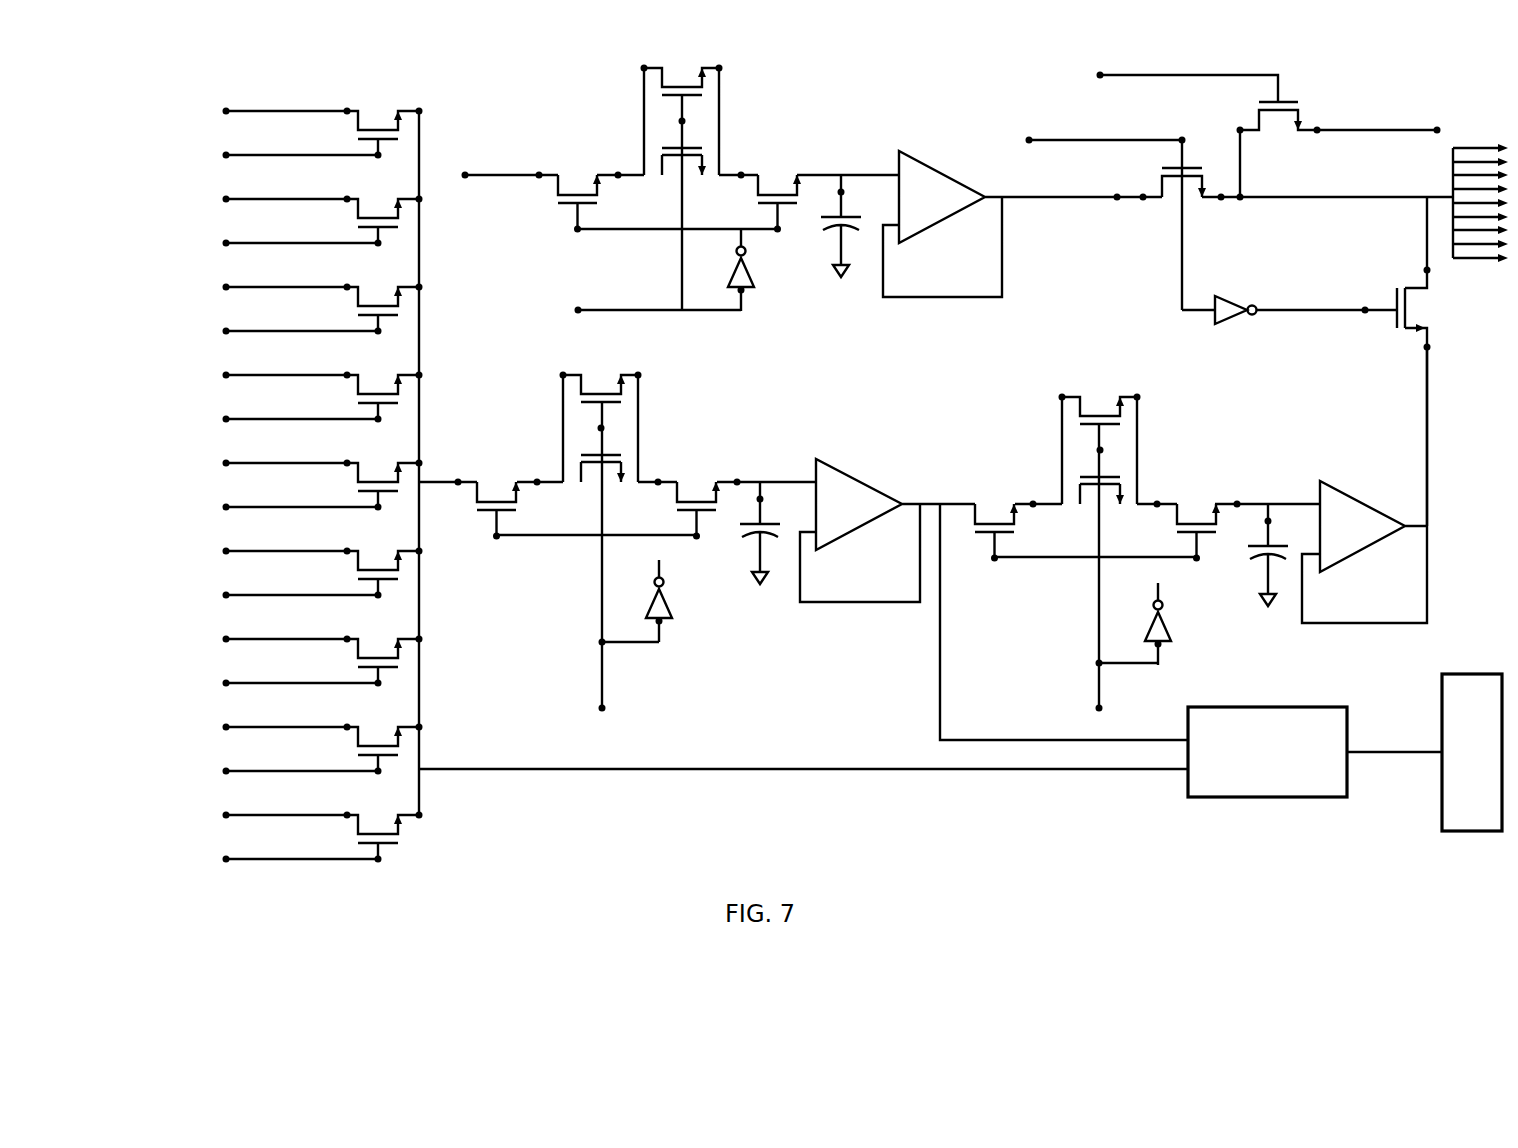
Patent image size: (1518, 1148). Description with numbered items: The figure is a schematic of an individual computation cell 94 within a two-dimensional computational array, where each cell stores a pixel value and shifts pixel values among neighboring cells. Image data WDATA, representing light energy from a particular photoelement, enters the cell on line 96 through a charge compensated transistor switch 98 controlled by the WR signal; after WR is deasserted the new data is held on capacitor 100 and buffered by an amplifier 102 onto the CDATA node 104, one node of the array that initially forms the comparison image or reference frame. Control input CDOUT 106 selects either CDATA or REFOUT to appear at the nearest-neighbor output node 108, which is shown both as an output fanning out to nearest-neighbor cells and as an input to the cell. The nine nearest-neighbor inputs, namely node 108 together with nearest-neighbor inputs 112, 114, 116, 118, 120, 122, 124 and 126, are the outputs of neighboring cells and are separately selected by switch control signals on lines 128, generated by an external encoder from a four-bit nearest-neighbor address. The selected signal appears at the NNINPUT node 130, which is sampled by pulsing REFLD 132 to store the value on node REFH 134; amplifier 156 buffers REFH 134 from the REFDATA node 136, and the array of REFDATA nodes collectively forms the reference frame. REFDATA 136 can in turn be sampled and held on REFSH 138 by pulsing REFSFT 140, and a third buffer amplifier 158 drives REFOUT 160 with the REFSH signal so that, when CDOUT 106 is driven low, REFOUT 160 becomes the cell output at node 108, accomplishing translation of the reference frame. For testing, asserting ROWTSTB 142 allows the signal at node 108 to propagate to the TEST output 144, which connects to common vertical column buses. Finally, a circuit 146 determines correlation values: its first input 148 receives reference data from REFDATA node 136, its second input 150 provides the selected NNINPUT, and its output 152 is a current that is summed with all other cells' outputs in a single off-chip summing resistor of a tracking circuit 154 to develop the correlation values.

The computation cell 94 is at (590, 812).
The line 96 is at (520, 178).
The charge compensated transistor switch 98 is at (610, 129).
The capacitor 100 is at (845, 233).
The amplifier 102 is at (958, 180).
The CDATA node 104 is at (1060, 200).
The control input CDOUT 106 is at (1029, 139).
The nearest-neighbor output node NN(0) 108 is at (226, 814).
The nearest-neighbor input NN(1) 112 is at (226, 726).
The nearest-neighbor input NN(2) 114 is at (226, 638).
The nearest-neighbor input NN(3) 116 is at (226, 550).
The nearest-neighbor input NN(4) 118 is at (226, 462).
The nearest-neighbor input NN(5) 120 is at (226, 374).
The nearest-neighbor input NN(6) 122 is at (226, 286).
The nearest-neighbor input NN(7) 124 is at (226, 198).
The nearest-neighbor input NN(8) 126 is at (226, 110).
The lines 128 is at (226, 858).
The nearest-neighbor input (NNINPUT) node 130 is at (440, 485).
The REFLD 132 is at (604, 690).
The REFH node 134 is at (749, 481).
The REFDATA node 136 is at (960, 512).
The REFSH 138 is at (1226, 509).
The REFSFT 140 is at (1102, 680).
The ROWTSTB 142 is at (1100, 74).
The TEST output 144 is at (1425, 130).
The circuit 146 is at (1270, 799).
The first input 148 is at (1147, 740).
The second input 150 is at (1147, 771).
The output 152 is at (1395, 756).
The tracking circuit 154 is at (1472, 833).
The amplifier 156 is at (877, 489).
The third buffer amplifier 158 is at (1372, 546).
The REFOUT 160 is at (1430, 437).